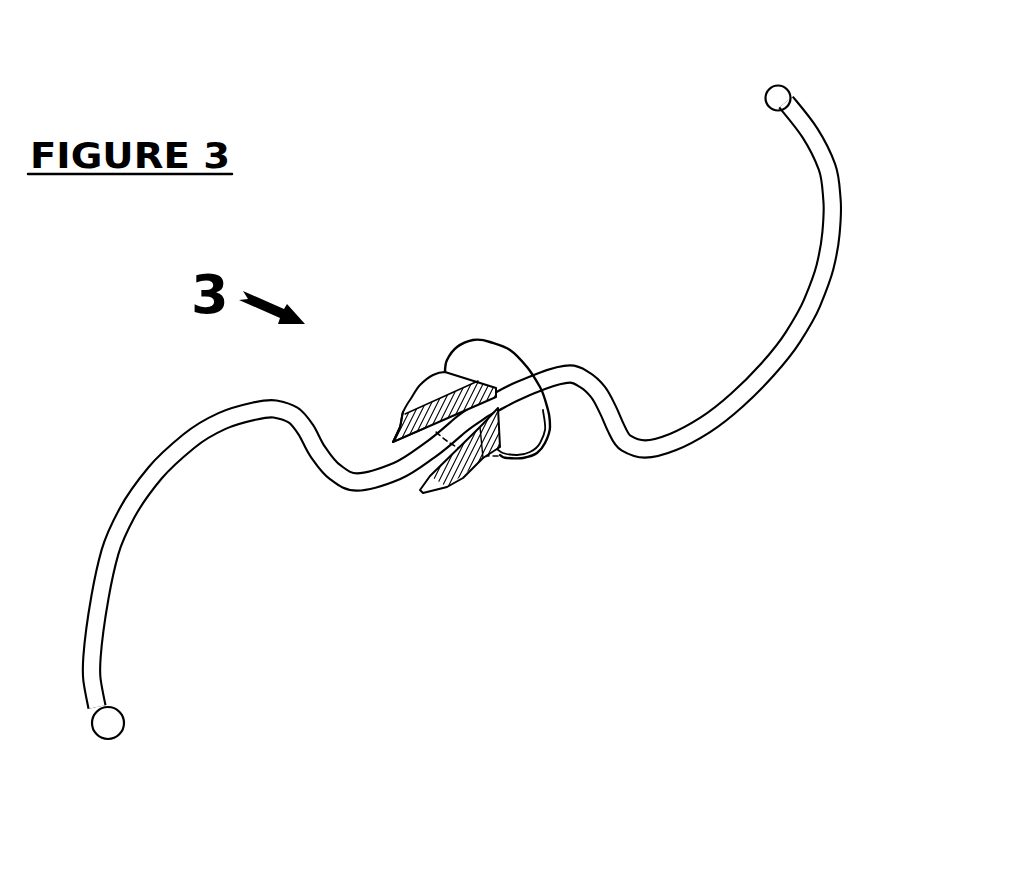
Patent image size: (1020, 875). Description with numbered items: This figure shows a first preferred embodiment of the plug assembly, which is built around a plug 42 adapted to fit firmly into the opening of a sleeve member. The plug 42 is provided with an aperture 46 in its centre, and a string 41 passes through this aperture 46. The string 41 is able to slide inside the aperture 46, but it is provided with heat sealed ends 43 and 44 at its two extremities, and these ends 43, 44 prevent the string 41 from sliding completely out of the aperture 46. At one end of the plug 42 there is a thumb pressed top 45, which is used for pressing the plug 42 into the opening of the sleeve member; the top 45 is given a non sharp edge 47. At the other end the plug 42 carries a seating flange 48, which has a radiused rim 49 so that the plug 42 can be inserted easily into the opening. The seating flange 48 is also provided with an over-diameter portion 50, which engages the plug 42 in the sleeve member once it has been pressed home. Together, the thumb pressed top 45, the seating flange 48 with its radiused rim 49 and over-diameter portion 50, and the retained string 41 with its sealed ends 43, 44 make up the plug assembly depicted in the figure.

The string 41 is at (461, 404).
The plug 42 is at (428, 381).
The heat sealed end 43 is at (745, 74).
The heat sealed end 44 is at (155, 711).
The thumb pressed top 45 is at (456, 372).
The aperture 46 is at (447, 321).
The non sharp edge 47 is at (547, 457).
The seating flange 48 is at (342, 395).
The radiused rim 49 is at (354, 488).
The over-diameter portion 50 is at (484, 490).